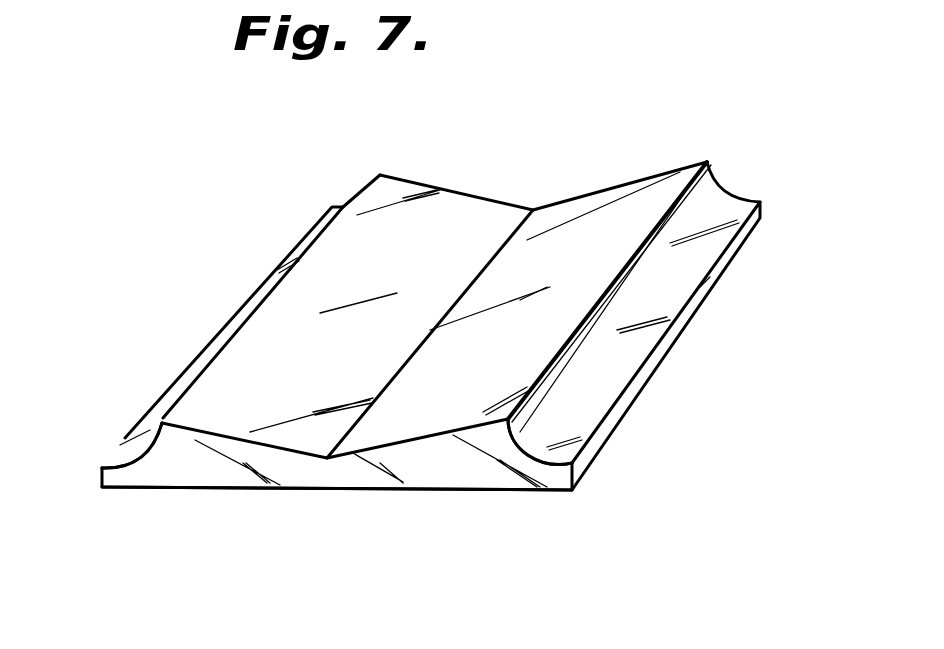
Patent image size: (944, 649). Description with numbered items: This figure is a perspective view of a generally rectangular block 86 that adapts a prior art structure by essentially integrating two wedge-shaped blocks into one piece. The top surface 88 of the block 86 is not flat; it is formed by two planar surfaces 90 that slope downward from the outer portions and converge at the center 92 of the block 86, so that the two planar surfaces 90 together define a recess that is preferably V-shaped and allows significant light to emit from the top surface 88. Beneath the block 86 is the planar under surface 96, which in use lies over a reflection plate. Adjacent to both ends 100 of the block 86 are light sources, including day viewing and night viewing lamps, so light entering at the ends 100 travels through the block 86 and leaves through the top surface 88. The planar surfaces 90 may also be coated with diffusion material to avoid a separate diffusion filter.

The block 86 is at (437, 442).
The top surface 88 is at (544, 263).
The planar surfaces 90 is at (380, 217).
The center 92 is at (477, 272).
The planar under surface 96 is at (277, 488).
The ends 100 is at (127, 440).